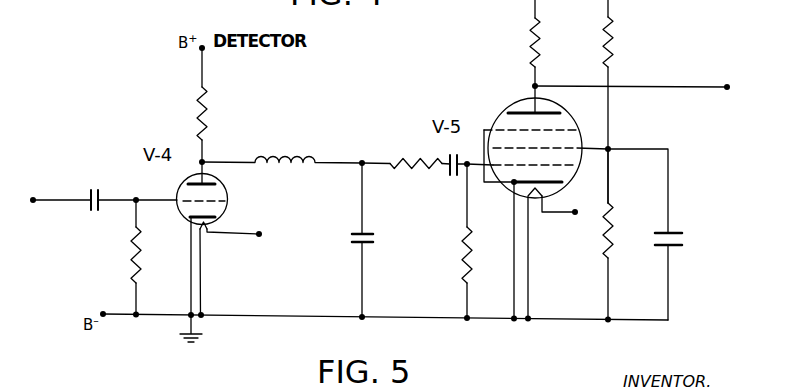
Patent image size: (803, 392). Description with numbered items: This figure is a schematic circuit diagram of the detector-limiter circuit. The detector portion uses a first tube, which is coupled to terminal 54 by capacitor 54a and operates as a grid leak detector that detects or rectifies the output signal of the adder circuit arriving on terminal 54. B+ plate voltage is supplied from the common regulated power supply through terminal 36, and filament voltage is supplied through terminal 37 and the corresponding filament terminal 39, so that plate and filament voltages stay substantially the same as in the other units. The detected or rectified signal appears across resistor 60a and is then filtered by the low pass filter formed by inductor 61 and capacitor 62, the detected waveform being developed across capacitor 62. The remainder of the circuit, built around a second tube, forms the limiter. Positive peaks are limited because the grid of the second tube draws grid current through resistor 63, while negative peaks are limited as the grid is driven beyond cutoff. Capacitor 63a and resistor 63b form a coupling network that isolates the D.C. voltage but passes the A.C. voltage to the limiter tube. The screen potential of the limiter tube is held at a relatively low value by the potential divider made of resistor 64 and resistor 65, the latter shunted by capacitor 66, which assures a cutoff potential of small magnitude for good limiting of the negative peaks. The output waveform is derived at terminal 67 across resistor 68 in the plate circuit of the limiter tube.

The terminal 36 is at (203, 49).
The terminal 37 is at (260, 233).
The filament terminal of tube V-5 39 is at (575, 213).
The terminal 54 is at (34, 198).
The capacitor 54a is at (97, 188).
The resistor 60a is at (207, 113).
The inductor 61 is at (304, 157).
The capacitor 62 is at (371, 239).
The resistor 63 is at (422, 156).
The capacitor 63a is at (452, 177).
The resistor 63b is at (505, 239).
The resistor 64 is at (613, 42).
The resistor 65 is at (612, 221).
The capacitor 66 is at (679, 238).
The terminal 67 is at (727, 86).
The resistor 68 is at (532, 54).